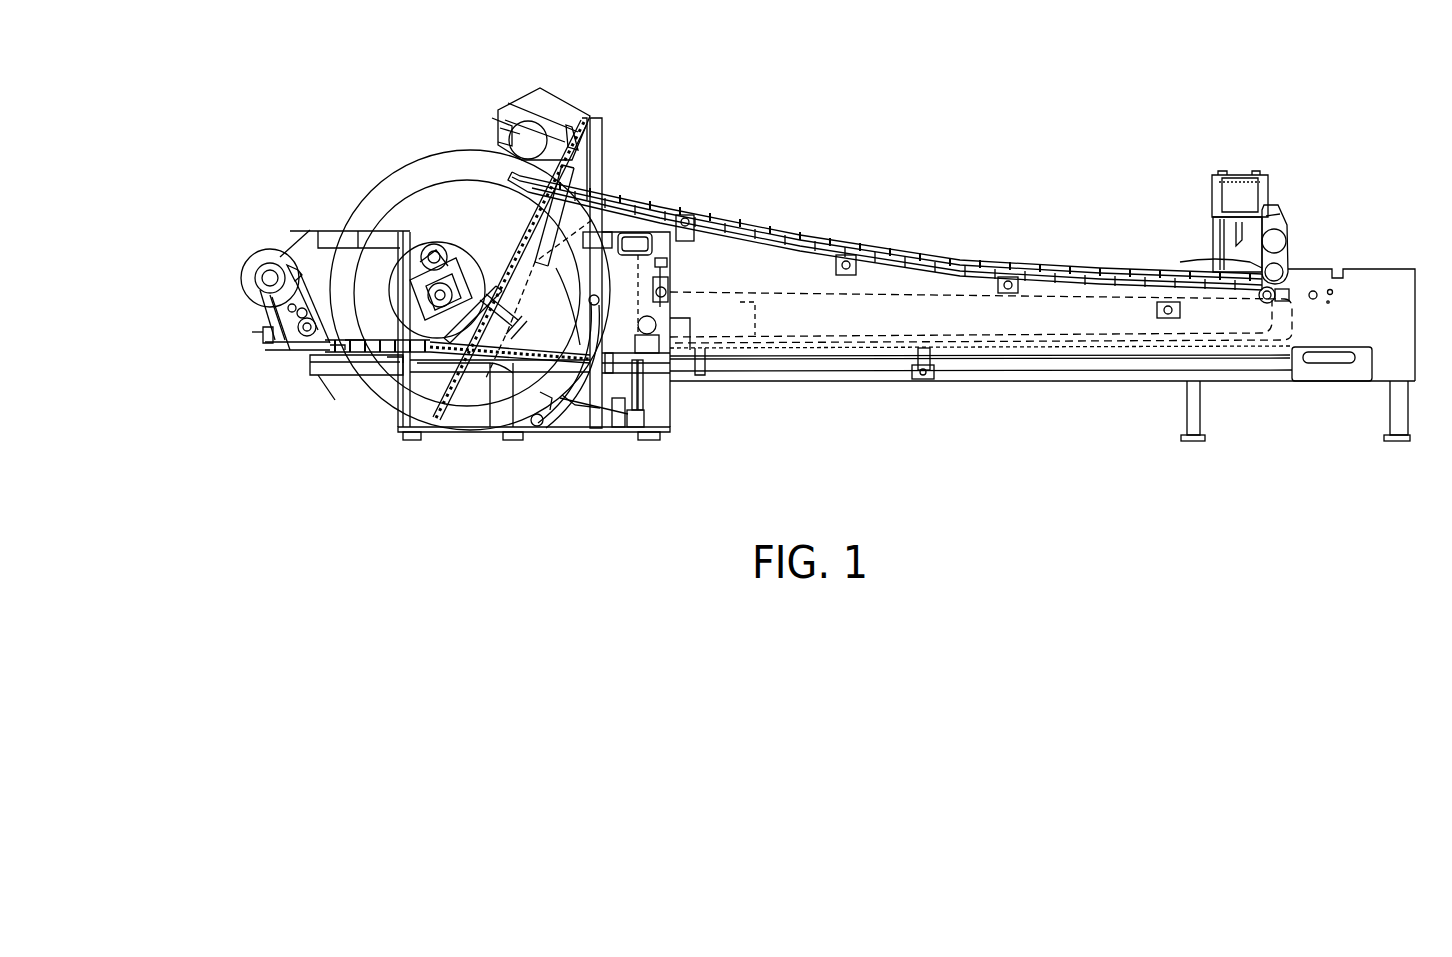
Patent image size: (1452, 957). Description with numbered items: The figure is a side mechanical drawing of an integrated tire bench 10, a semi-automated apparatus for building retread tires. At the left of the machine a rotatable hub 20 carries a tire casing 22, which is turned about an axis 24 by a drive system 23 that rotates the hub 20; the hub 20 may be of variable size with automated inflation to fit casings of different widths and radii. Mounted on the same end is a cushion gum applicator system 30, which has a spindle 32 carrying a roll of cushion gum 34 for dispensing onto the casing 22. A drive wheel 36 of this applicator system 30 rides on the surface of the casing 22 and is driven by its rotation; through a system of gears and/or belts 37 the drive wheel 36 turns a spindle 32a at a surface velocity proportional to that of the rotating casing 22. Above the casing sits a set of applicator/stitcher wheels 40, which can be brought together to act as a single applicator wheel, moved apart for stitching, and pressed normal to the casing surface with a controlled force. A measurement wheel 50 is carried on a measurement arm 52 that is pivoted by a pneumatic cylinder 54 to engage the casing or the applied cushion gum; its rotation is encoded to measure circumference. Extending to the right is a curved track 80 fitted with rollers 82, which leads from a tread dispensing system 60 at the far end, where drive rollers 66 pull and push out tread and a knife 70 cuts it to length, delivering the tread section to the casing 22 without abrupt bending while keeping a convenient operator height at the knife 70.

The integrated tire bench 10 is at (858, 140).
The rotatable hub 20 is at (452, 243).
The tire casing 22 is at (379, 300).
The drive system 23 is at (418, 240).
The axis 24 is at (380, 330).
The cushion gum applicator system 30 is at (285, 385).
The spindle 32 is at (282, 262).
The spindle 32a is at (282, 360).
The roll of cushion gum 34 is at (252, 256).
The drive wheel 36 is at (330, 370).
The system of gears and/or belts 37 is at (327, 360).
The applicator/stitcher wheels 40 is at (512, 137).
The measurement wheel 50 is at (600, 313).
The measurement arm 52 is at (548, 398).
The pneumatic cylinder 54 is at (588, 412).
The tread dispensing system 60 is at (1235, 157).
The drive rollers 66 is at (1285, 250).
The knife 70 is at (1240, 250).
The curved track 80 is at (873, 262).
The rollers 82 is at (708, 213).